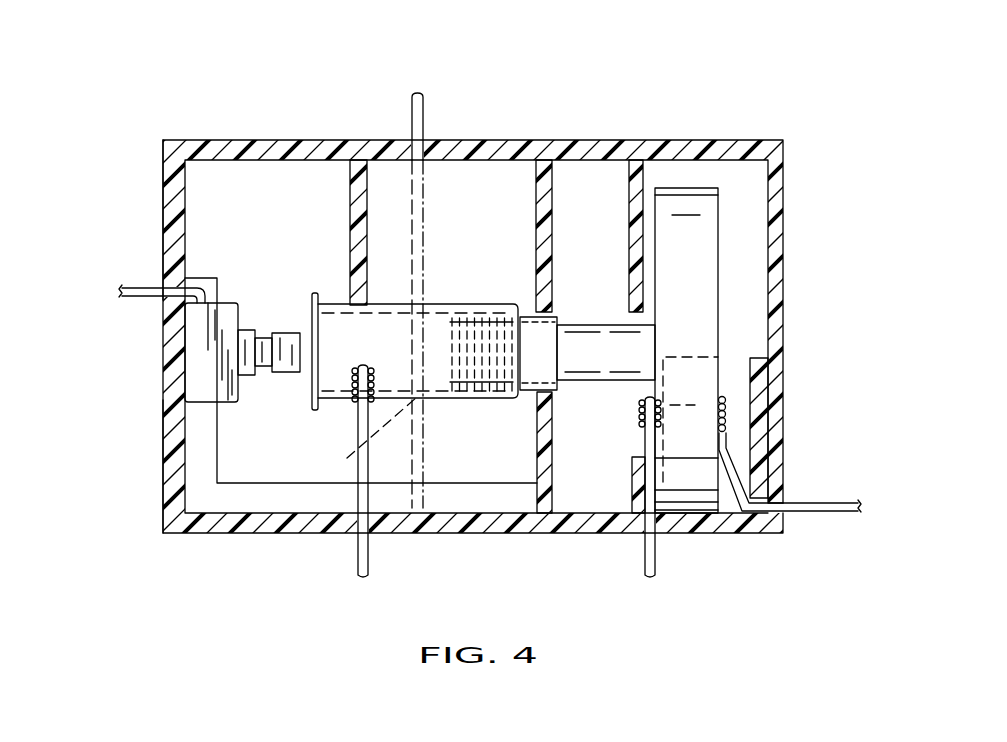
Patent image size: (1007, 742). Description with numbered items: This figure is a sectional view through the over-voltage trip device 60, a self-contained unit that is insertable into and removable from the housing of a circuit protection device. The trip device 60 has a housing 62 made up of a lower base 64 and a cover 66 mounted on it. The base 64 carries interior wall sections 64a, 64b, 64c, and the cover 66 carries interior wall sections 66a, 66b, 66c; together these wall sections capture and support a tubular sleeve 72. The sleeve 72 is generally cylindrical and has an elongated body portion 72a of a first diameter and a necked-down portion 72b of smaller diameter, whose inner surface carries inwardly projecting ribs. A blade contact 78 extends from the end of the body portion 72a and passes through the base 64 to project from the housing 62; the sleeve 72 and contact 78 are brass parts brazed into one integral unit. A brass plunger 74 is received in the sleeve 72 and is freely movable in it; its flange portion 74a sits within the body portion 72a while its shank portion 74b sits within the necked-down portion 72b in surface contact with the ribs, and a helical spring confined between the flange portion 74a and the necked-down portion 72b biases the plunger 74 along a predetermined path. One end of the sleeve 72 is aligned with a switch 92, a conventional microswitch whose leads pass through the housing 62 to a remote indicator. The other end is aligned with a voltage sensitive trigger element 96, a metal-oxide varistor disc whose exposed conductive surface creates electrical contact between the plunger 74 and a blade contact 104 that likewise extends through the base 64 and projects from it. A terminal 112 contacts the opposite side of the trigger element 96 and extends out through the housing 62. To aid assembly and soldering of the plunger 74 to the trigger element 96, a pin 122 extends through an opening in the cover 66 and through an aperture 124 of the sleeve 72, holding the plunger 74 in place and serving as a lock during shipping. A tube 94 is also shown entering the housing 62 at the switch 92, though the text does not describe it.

The over-voltage trip device 60 is at (617, 105).
The housing 62 is at (262, 138).
The lower base 64 is at (168, 486).
The interior wall section 64a is at (540, 446).
The interior wall section 64b is at (633, 478).
The interior wall section 64c is at (757, 438).
The cover 66 is at (170, 196).
The interior wall section 66a is at (350, 197).
The interior wall section 66b is at (540, 194).
The interior wall section 66c is at (632, 218).
The tubular sleeve 72 is at (437, 300).
The elongated body portion 72a is at (336, 303).
The necked-down portion 72b is at (529, 318).
The plunger 74 is at (582, 322).
The flange portion 74a is at (437, 385).
The shank portion 74b is at (591, 372).
The blade contact 78 is at (355, 553).
The switch 92 is at (198, 355).
The inlet tube 94 is at (135, 295).
The voltage sensitive trigger element 96 is at (700, 228).
The blade contact 104 is at (646, 562).
The terminal 112 is at (815, 508).
The pin 122 is at (425, 108).
The aperture 124 is at (358, 434).